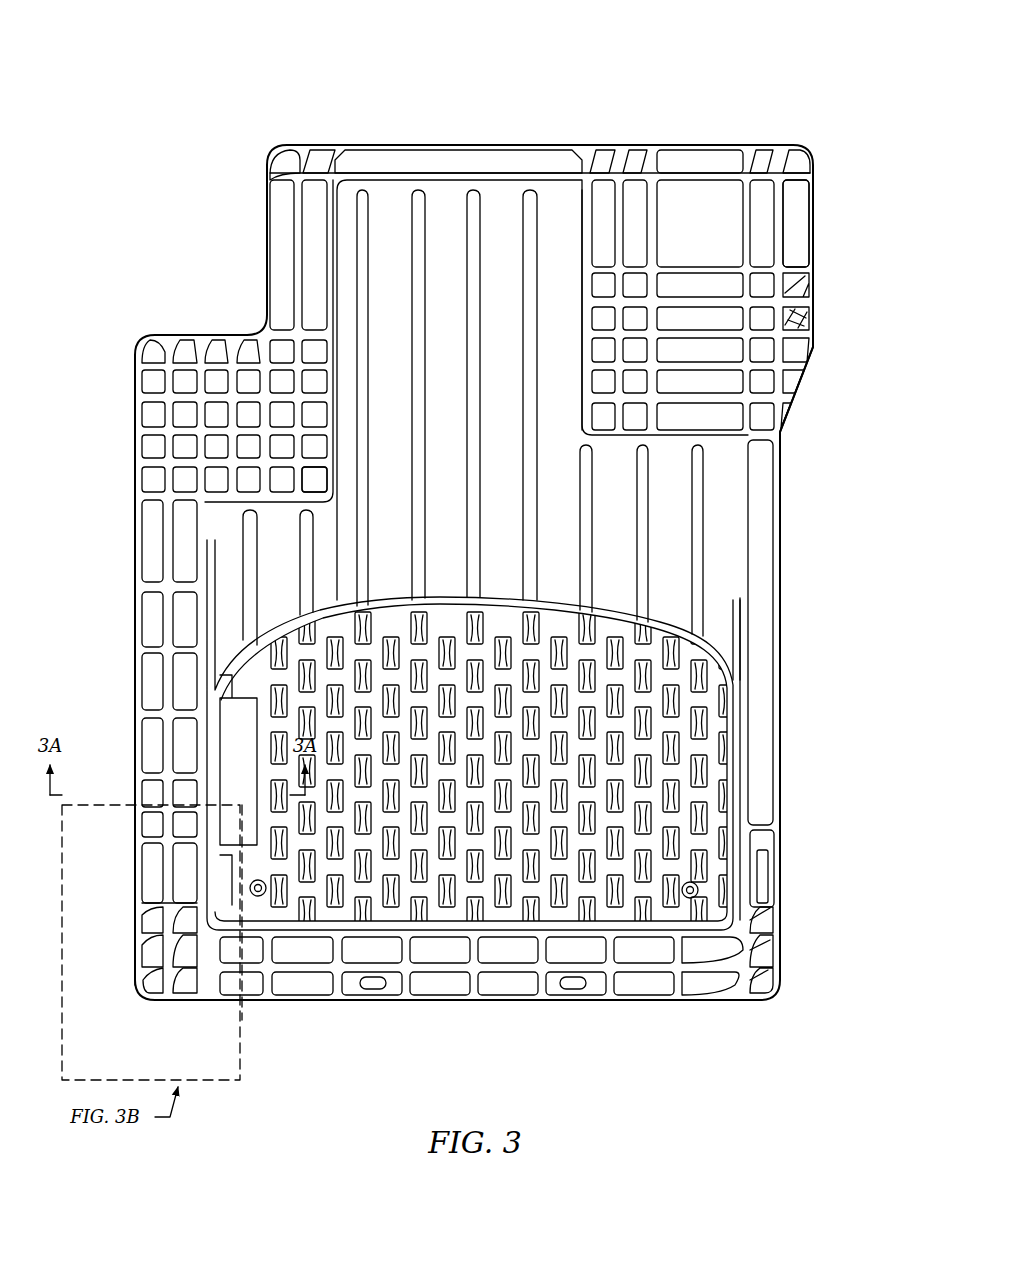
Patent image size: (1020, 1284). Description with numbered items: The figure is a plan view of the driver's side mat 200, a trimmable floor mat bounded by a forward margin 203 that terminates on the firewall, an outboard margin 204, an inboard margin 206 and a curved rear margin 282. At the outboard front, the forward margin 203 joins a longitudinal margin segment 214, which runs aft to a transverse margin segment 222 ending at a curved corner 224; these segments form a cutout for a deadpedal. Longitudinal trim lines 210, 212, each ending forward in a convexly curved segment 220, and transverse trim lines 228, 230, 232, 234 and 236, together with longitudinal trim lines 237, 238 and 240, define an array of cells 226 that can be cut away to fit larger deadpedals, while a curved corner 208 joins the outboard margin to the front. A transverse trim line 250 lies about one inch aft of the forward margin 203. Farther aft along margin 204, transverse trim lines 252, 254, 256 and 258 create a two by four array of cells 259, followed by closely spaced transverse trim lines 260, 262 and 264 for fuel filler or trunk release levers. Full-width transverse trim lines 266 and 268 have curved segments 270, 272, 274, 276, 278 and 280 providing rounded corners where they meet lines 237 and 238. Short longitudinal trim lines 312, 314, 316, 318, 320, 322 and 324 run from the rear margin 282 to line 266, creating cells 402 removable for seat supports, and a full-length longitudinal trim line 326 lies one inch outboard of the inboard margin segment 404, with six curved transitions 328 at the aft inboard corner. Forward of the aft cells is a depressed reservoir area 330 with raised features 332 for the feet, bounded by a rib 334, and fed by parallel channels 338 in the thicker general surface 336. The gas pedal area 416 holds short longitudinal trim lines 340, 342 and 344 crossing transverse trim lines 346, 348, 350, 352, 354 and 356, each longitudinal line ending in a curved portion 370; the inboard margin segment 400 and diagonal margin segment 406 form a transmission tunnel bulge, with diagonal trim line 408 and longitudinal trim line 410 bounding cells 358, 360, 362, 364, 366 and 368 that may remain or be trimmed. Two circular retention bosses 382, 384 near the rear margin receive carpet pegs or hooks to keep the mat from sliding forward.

The driver's side mat 200 is at (222, 62).
The forward margin 203 is at (420, 147).
The outboard margin 204 is at (135, 515).
The inboard margin 206 is at (782, 522).
The curved corner 208 is at (275, 150).
The longitudinal trim line 210 is at (290, 200).
The longitudinal trim line 212 is at (330, 222).
The longitudinal margin segment 214 is at (272, 262).
The convexly curved segment 220 is at (318, 155).
The transverse margin segment 222 is at (197, 337).
The curved corner 224 is at (148, 345).
The cells 226 is at (318, 335).
The transverse trim line 228 is at (238, 350).
The transverse trim line 230 is at (175, 412).
The transverse trim line 232 is at (315, 475).
The transverse trim line 234 is at (316, 505).
The transverse trim line 236 is at (250, 520).
The longitudinal trim line 237 is at (175, 548).
The longitudinal trim line 238 is at (180, 612).
The longitudinal trim line 240 is at (200, 445).
The transverse trim line 250 is at (505, 160).
The transverse trim line 252 is at (152, 582).
The transverse trim line 254 is at (152, 642).
The transverse trim line 256 is at (185, 726).
The transverse trim line 258 is at (150, 792).
The cells 259 is at (185, 682).
The transverse trim line 260 is at (185, 824).
The transverse trim line 262 is at (185, 858).
The transverse trim line 264 is at (185, 892).
The transverse trim line 266 is at (375, 945).
The transverse trim line 268 is at (330, 990).
The curved segment 270 is at (185, 952).
The curved segment 272 is at (180, 925).
The curved segment 274 is at (220, 965).
The curved segment 276 is at (160, 984).
The curved segment 278 is at (172, 978).
The curved segment 280 is at (205, 985).
The rear margin 282 is at (505, 965).
The longitudinal trim line 312 is at (290, 988).
The longitudinal trim line 314 is at (350, 975).
The longitudinal trim line 316 is at (430, 990).
The longitudinal trim line 318 is at (480, 985).
The longitudinal trim line 320 is at (560, 975).
The longitudinal trim line 322 is at (665, 975).
The longitudinal trim line 324 is at (705, 975).
The longitudinal trim line 326 is at (760, 560).
The curved transitions 328 is at (740, 985).
The reservoir area 330 is at (380, 595).
The raised features 332 is at (510, 620).
The rib 334 is at (210, 705).
The general surface 336 is at (485, 385).
The channels 338 is at (465, 400).
The longitudinal trim line 340 is at (590, 272).
The longitudinal trim line 342 is at (585, 442).
The longitudinal trim line 344 is at (690, 200).
The transverse trim line 346 is at (665, 280).
The transverse trim line 348 is at (705, 320).
The transverse trim line 350 is at (625, 330).
The transverse trim line 352 is at (605, 410).
The transverse trim line 354 is at (680, 415).
The transverse trim line 356 is at (720, 462).
The cell 358 is at (800, 258).
The cell 360 is at (800, 287).
The cell 362 is at (805, 352).
The cell 364 is at (800, 315).
The cell 366 is at (790, 410).
The cell 368 is at (785, 430).
The curved portion 370 is at (598, 150).
The retention boss 382 is at (270, 885).
The retention boss 384 is at (700, 888).
The margin segment 400 is at (813, 232).
The cells 402 is at (500, 985).
The inboard margin segment 404 is at (782, 684).
The diagonal margin segment 406 is at (800, 380).
The diagonal trim line 408 is at (800, 325).
The longitudinal trim line 410 is at (795, 195).
The gas pedal area 416 is at (635, 228).